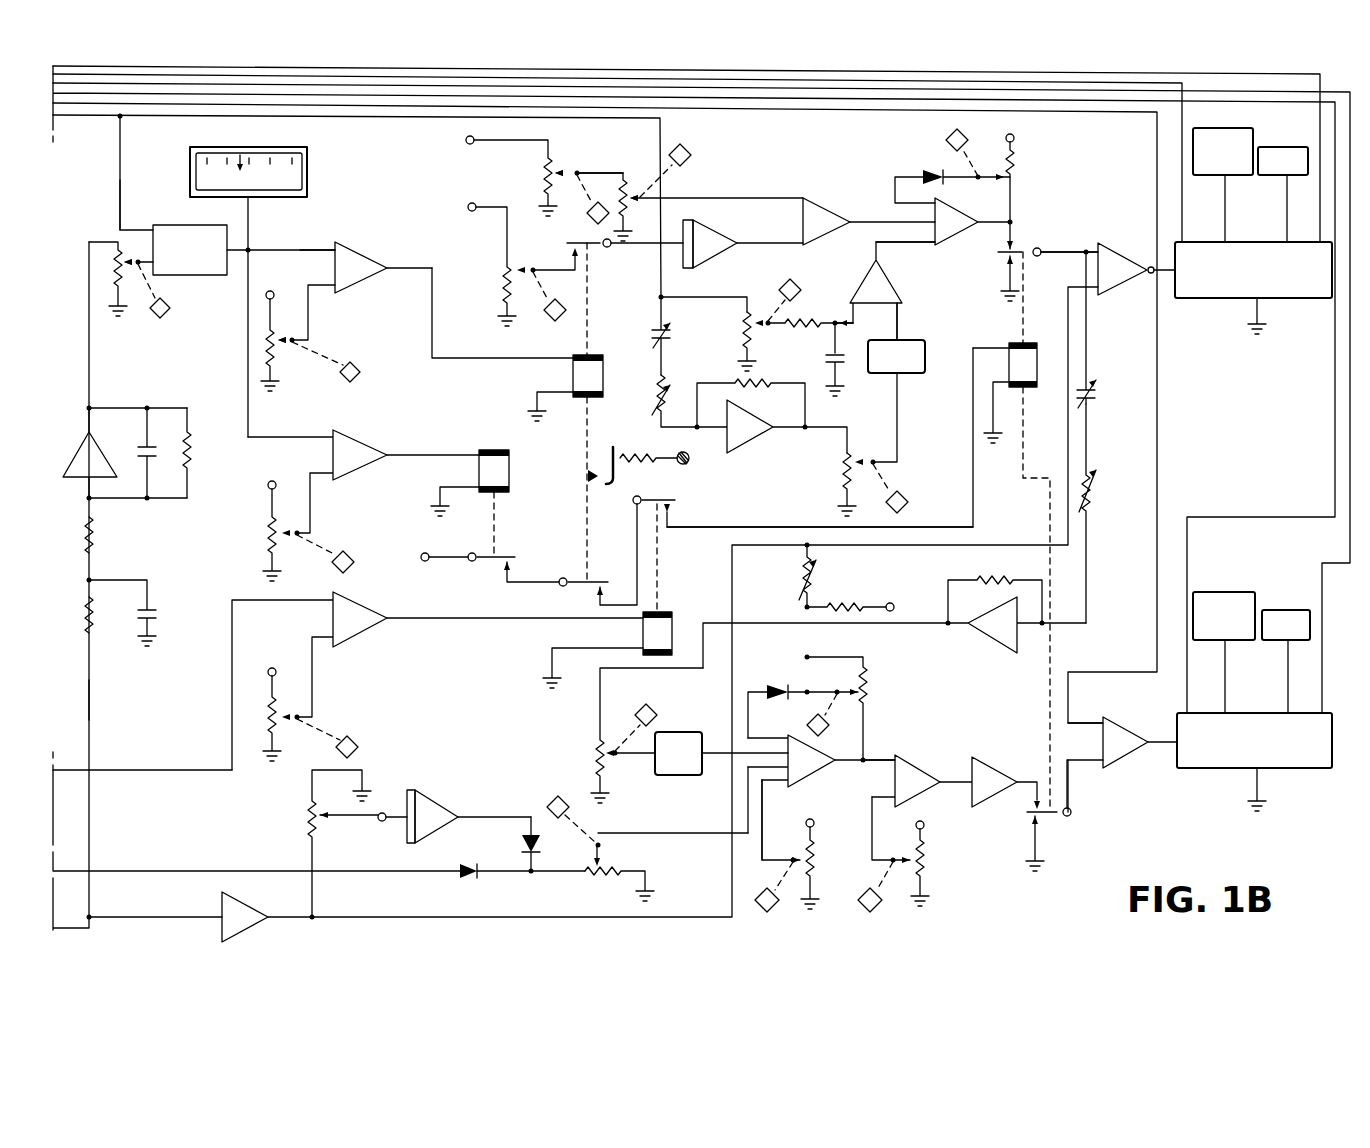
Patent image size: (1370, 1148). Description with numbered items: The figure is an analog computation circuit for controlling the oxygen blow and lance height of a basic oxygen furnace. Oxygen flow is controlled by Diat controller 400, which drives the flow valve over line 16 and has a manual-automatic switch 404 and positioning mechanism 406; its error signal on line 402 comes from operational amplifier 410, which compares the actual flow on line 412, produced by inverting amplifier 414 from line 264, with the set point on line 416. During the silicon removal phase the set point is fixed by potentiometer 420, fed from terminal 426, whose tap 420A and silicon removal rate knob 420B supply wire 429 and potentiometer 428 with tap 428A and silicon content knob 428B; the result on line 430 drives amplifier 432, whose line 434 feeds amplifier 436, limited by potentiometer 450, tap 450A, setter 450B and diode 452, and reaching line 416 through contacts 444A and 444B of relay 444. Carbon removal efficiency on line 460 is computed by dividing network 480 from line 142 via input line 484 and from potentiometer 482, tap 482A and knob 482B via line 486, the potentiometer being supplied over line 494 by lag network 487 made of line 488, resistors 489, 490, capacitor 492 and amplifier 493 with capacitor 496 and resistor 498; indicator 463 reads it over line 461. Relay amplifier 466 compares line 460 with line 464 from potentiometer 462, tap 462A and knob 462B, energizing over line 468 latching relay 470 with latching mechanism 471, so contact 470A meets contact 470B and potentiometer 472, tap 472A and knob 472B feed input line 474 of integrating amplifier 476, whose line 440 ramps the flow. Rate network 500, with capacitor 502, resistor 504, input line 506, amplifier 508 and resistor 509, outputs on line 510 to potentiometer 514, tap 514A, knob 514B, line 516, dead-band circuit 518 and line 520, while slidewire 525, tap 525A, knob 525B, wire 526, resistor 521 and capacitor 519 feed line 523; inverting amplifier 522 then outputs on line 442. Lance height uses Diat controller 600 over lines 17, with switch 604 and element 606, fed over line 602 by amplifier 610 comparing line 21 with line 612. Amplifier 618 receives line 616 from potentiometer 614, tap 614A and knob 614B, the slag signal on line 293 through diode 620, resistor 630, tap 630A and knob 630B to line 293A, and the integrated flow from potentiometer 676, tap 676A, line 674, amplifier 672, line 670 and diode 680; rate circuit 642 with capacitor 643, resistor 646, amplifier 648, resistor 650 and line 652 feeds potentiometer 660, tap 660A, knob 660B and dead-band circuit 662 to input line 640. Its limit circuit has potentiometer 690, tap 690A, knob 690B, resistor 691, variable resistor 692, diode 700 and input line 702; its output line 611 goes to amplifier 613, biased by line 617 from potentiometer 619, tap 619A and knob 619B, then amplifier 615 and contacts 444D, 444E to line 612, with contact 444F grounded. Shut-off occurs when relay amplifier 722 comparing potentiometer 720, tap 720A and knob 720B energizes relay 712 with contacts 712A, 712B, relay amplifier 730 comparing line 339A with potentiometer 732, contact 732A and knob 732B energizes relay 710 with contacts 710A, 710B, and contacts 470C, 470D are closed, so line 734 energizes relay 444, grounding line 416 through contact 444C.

The line 16 is at (437, 68).
The lines 17 is at (400, 85).
The line 21 is at (352, 106).
The line 142 is at (180, 117).
The line 264 is at (165, 920).
The line 293 is at (228, 872).
The line 293A is at (700, 835).
The line 339A is at (148, 768).
The Diat controller 400 is at (1225, 300).
The input line 402 is at (1152, 276).
The manual-automatic switch 404 is at (1235, 127).
The positioning mechanism 406 is at (1298, 145).
The operational amplifier 410 is at (1125, 248).
The line 412 is at (432, 915).
The inverting amplifier 414 is at (250, 908).
The line 416 is at (1060, 252).
The potentiometer 420 is at (548, 173).
The variable tap 420A is at (562, 170).
The knob 420B is at (590, 207).
The terminal 426 is at (470, 146).
The potentiometer 428 is at (633, 212).
The variable tap 428A is at (640, 196).
The knob 428B is at (687, 150).
The connecting wire 429 is at (604, 173).
The line 430 is at (725, 198).
The operational amplifier 432 is at (833, 198).
The line 434 is at (868, 222).
The amplifier 436 is at (955, 215).
The line 440 is at (770, 245).
The line 442 is at (888, 243).
The relay 444 is at (1037, 360).
The movable relay contact 444A is at (1024, 248).
The upper stationary contact 444B is at (986, 236).
The lower stationary contact 444C is at (1006, 262).
The upper stationary contact 444D is at (1021, 801).
The movable contact 444E is at (1060, 816).
The lower stationary contact 444F is at (1035, 826).
The potentiometer 450 is at (1015, 176).
The variable tap 450A is at (996, 176).
The setter 450B is at (946, 142).
The diode 452 is at (925, 172).
The line 460 is at (322, 250).
The line 461 is at (252, 222).
The potentiometer 462 is at (262, 342).
The movable tap 462A is at (283, 344).
The knob 462B is at (362, 378).
The indicator 463 is at (307, 172).
The line 464 is at (309, 320).
The relay amplifier 466 is at (366, 258).
The line 468 is at (418, 272).
The latching relay 470 is at (572, 376).
The upper movable contact 470A is at (600, 252).
The lower stationary contact 470B is at (565, 240).
The movable contact 470C is at (592, 580).
The lower stationary contact 470D is at (598, 592).
The latching mechanism 471 is at (598, 458).
The potentiometer 472 is at (500, 272).
The adjustable tap 472A is at (527, 280).
The knob 472B is at (566, 305).
The input line 474 is at (683, 256).
The integrating operational amplifier 476 is at (740, 232).
The dividing network 480 is at (183, 225).
The potentiometer 482 is at (120, 264).
The variable tap 482A is at (133, 270).
The knob 482B is at (170, 310).
The input line 484 is at (120, 192).
The input line 486 is at (150, 270).
The lag network 487 is at (176, 555).
The input line 488 is at (92, 700).
The resistor 489 is at (92, 625).
The resistor 490 is at (97, 540).
The capacitor 492 is at (155, 613).
The operational amplifier 493 is at (105, 455).
The line 494 is at (90, 360).
The capacitor 496 is at (158, 455).
The resistor 498 is at (192, 455).
The rate type network 500 is at (762, 486).
The variable capacitor 502 is at (672, 340).
The variable resistor 504 is at (655, 392).
The input line 506 is at (665, 430).
The operational amplifier 508 is at (760, 445).
The resistor 509 is at (748, 383).
The output line 510 is at (848, 428).
The potentiometer 514 is at (842, 456).
The variable tap 514A is at (858, 458).
The knob 514B is at (906, 497).
The line 516 is at (897, 415).
The dead-band circuit 518 is at (926, 355).
The capacitor 519 is at (848, 358).
The line 520 is at (905, 323).
The resistor 521 is at (805, 320).
The inverting amplifier 522 is at (900, 288).
The line 523 is at (861, 323).
The slidewire resistor 525 is at (742, 322).
The variable tap 525A is at (760, 328).
The knob 525B is at (793, 283).
The wire 526 is at (727, 297).
The Diat controller 600 is at (1220, 770).
The input signal line 602 is at (1160, 745).
The manual-automatic switch 604 is at (1220, 592).
The positioning element 606 is at (1288, 608).
The operational amplifier 610 is at (1130, 722).
The line 611 is at (843, 763).
The line 612 is at (1068, 783).
The amplifier 613 is at (917, 756).
The potentiometer 614 is at (816, 862).
The variable tap 614A is at (797, 857).
The knob 614B is at (775, 912).
The amplifier 615 is at (995, 758).
The line 616 is at (760, 848).
The line 617 is at (872, 810).
The operational amplifier 618 is at (817, 772).
The potentiometer 619 is at (930, 864).
The variable tap 619A is at (907, 857).
The knob 619B is at (882, 912).
The diode 620 is at (470, 878).
The adjustable tapped resistor 630 is at (602, 878).
The adjustable tap 630A is at (605, 856).
The knob 630B is at (556, 820).
The input line 640 is at (720, 757).
The rate type circuit 642 is at (1136, 575).
The variable capacitor 643 is at (1095, 392).
The variable resistor 646 is at (1095, 498).
The operational amplifier 648 is at (988, 645).
The resistor 650 is at (988, 578).
The line 652 is at (862, 623).
The potentiometer 660 is at (597, 750).
The variable tap 660A is at (612, 760).
The knob 660B is at (655, 704).
The dead-band circuit 662 is at (690, 731).
The line 670 is at (497, 816).
The operational amplifier 672 is at (442, 795).
The line 674 is at (383, 812).
The potentiometer 676 is at (305, 816).
The variable tap 676A is at (323, 820).
The diode 680 is at (520, 843).
The potentiometer 690 is at (870, 678).
The variable tap 690A is at (853, 690).
The knob 690B is at (808, 722).
The resistor 691 is at (855, 604).
The variable resistor 692 is at (797, 572).
The diode 700 is at (782, 684).
The input line 702 is at (746, 700).
The relay 710 is at (665, 620).
The movable contact 710A is at (658, 496).
The lower stationary contact 710B is at (672, 515).
The relay 712 is at (510, 462).
The movable contact 712A is at (505, 555).
The lower stationary contact 712B is at (503, 568).
The potentiometer 720 is at (265, 537).
The tap 720A is at (284, 540).
The knob 720B is at (355, 575).
The relay amplifier 722 is at (380, 448).
The relay amplifier 730 is at (380, 633).
The potentiometer 732 is at (272, 722).
The movable contact 732A is at (284, 722).
The knob 732B is at (360, 752).
The line 734 is at (775, 527).